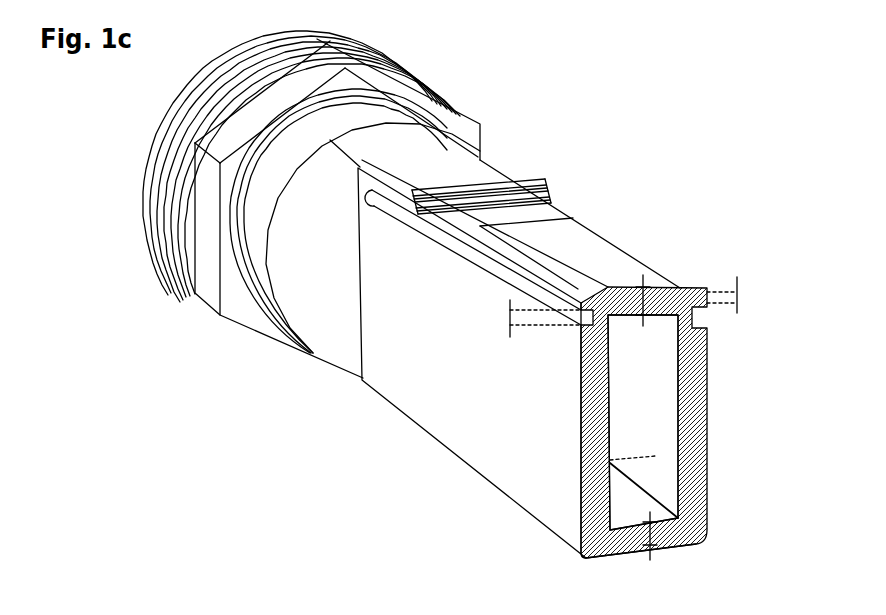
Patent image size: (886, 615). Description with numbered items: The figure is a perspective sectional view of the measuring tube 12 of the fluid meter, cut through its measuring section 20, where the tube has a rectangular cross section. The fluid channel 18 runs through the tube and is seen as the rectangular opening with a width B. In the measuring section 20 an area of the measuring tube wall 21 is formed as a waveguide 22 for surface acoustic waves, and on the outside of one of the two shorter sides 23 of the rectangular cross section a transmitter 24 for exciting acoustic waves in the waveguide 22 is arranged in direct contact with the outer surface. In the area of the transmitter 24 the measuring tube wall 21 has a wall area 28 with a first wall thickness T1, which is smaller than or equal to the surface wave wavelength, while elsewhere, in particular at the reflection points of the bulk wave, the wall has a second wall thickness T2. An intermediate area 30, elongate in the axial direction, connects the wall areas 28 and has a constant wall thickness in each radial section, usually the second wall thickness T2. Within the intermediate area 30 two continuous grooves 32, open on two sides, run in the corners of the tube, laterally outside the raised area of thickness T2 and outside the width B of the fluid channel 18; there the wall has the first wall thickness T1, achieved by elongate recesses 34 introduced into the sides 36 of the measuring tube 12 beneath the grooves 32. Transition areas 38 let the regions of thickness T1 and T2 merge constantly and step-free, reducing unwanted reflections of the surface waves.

The measuring tube 12 is at (722, 92).
The fluid channel 18 is at (655, 402).
The measuring section 20 is at (463, 462).
The measuring tube wall 21 is at (395, 385).
The waveguide 22 is at (686, 280).
The shorter side 23 is at (488, 162).
The transmitter 24 is at (520, 180).
The wall area 28 is at (550, 187).
The intermediate area 30 is at (580, 240).
The groove 32 is at (562, 262).
The elongate recess 34 is at (410, 233).
The side 36 is at (705, 432).
The transition area 38 is at (413, 143).
The width of the fluid channel B is at (655, 456).
The first wall thickness T1 is at (510, 327).
The second wall thickness T2 is at (660, 279).